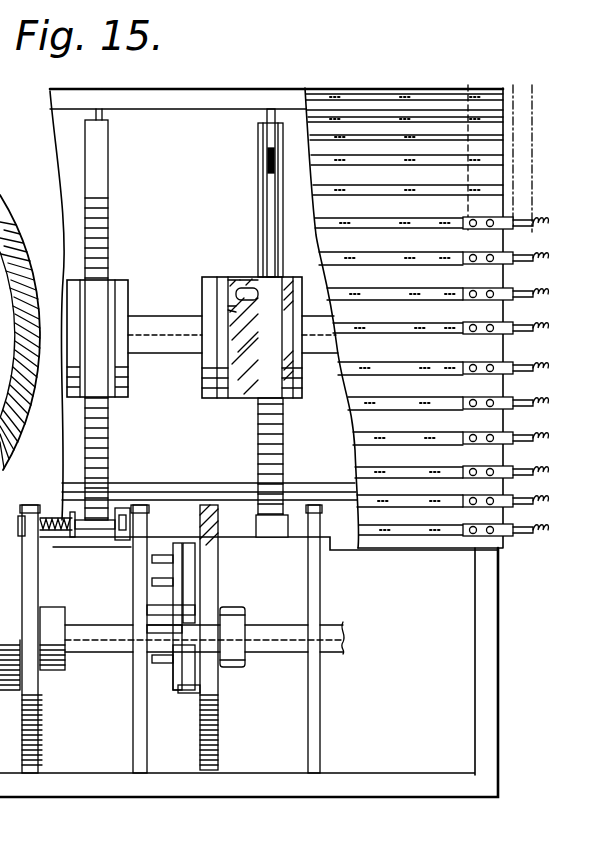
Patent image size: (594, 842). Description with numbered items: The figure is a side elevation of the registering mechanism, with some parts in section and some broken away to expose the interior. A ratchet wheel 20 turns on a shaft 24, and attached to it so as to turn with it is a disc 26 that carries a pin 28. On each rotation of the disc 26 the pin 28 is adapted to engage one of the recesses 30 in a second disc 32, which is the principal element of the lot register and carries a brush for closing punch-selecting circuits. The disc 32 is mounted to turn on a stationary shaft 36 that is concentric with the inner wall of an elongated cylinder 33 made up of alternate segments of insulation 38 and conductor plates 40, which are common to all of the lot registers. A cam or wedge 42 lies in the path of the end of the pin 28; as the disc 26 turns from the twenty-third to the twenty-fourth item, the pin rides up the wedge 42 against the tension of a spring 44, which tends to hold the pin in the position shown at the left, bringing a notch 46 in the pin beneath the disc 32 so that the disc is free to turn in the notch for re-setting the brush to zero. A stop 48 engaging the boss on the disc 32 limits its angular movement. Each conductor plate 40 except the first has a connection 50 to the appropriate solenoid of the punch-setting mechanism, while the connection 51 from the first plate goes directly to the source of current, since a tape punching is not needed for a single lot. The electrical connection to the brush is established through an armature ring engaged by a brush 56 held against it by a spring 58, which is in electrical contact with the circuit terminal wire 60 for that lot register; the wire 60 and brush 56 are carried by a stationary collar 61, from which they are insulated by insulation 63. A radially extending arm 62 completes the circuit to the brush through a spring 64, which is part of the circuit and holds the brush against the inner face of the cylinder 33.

The ratchet wheel 20 is at (187, 695).
The shaft 24 is at (335, 628).
The disc 26 is at (219, 712).
The pin 28 is at (83, 525).
The recesses 30 is at (108, 203).
The second disc 32 is at (100, 170).
The elongated cylinder 33 is at (445, 457).
The shaft 36 is at (174, 338).
The insulation segments 38 is at (497, 127).
The conductor plates 40 is at (497, 195).
The cam or wedge 42 is at (126, 518).
The spring 44 is at (56, 617).
The notch 46 is at (268, 538).
The stop 48 is at (190, 485).
The connection 50 is at (533, 262).
The connection 51 is at (540, 520).
The brush 56 is at (253, 280).
The spring 58 is at (243, 280).
The circuit terminal wire 60 is at (234, 283).
The stationary collar 61 is at (232, 396).
The arm 62 is at (273, 250).
The insulation 63 is at (228, 313).
The spring 64 is at (271, 160).